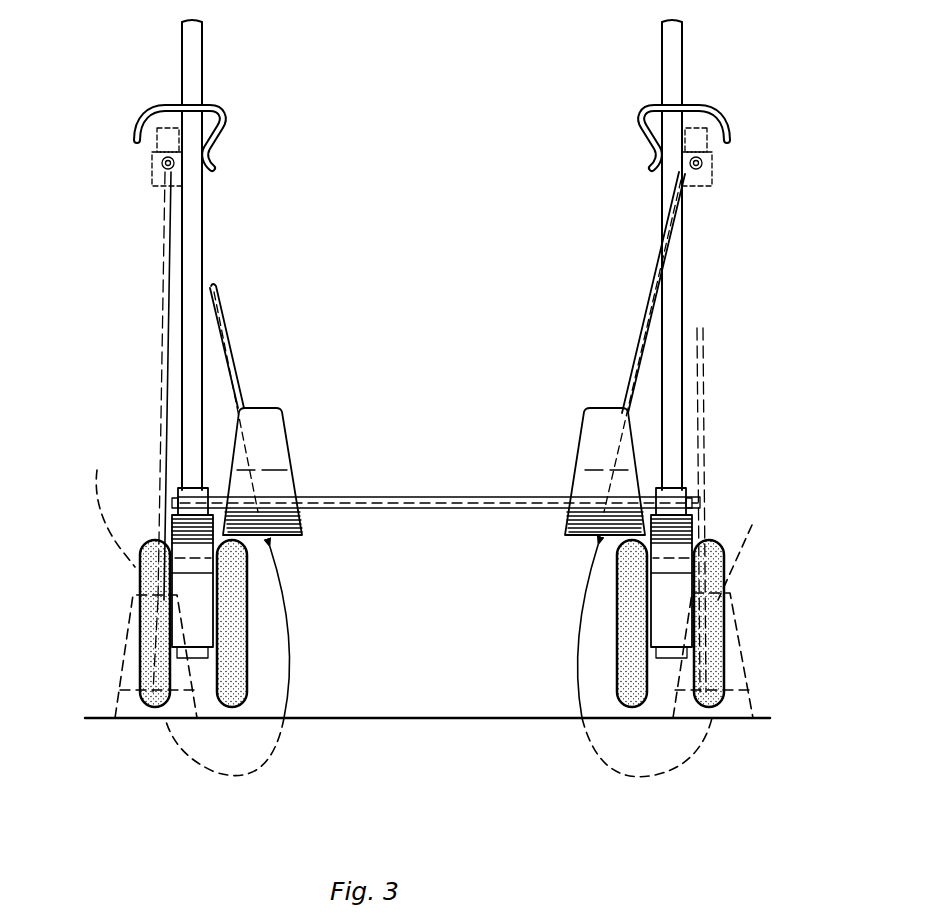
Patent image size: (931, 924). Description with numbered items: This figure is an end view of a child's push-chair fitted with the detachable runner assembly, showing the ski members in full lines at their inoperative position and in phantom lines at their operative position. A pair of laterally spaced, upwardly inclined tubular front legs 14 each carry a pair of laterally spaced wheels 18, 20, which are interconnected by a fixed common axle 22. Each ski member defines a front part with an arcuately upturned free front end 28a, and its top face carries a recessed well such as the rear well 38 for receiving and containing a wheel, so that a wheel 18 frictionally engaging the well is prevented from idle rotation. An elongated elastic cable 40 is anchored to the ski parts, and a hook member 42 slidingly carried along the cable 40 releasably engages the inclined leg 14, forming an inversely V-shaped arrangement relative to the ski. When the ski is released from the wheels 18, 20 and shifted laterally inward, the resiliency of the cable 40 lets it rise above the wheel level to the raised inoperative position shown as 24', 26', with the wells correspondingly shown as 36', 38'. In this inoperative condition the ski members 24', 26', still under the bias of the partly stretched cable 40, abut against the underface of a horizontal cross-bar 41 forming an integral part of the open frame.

The front leg 14 is at (193, 230).
The hook member 42 is at (232, 113).
The elastic cable 40 is at (227, 328).
The upturned free front end 28a is at (262, 423).
The ski member in inoperative position 24' is at (221, 562).
The ski member in inoperative position 26' is at (650, 562).
The horizontal cross-bar 41 is at (415, 497).
The front well in inoperative position 36' is at (115, 503).
The rear well in inoperative position 38' is at (746, 548).
The wheel 18 is at (150, 542).
The wheel 20 is at (232, 655).
The fixed common axle 22 is at (213, 650).
The rear well 38 is at (645, 646).